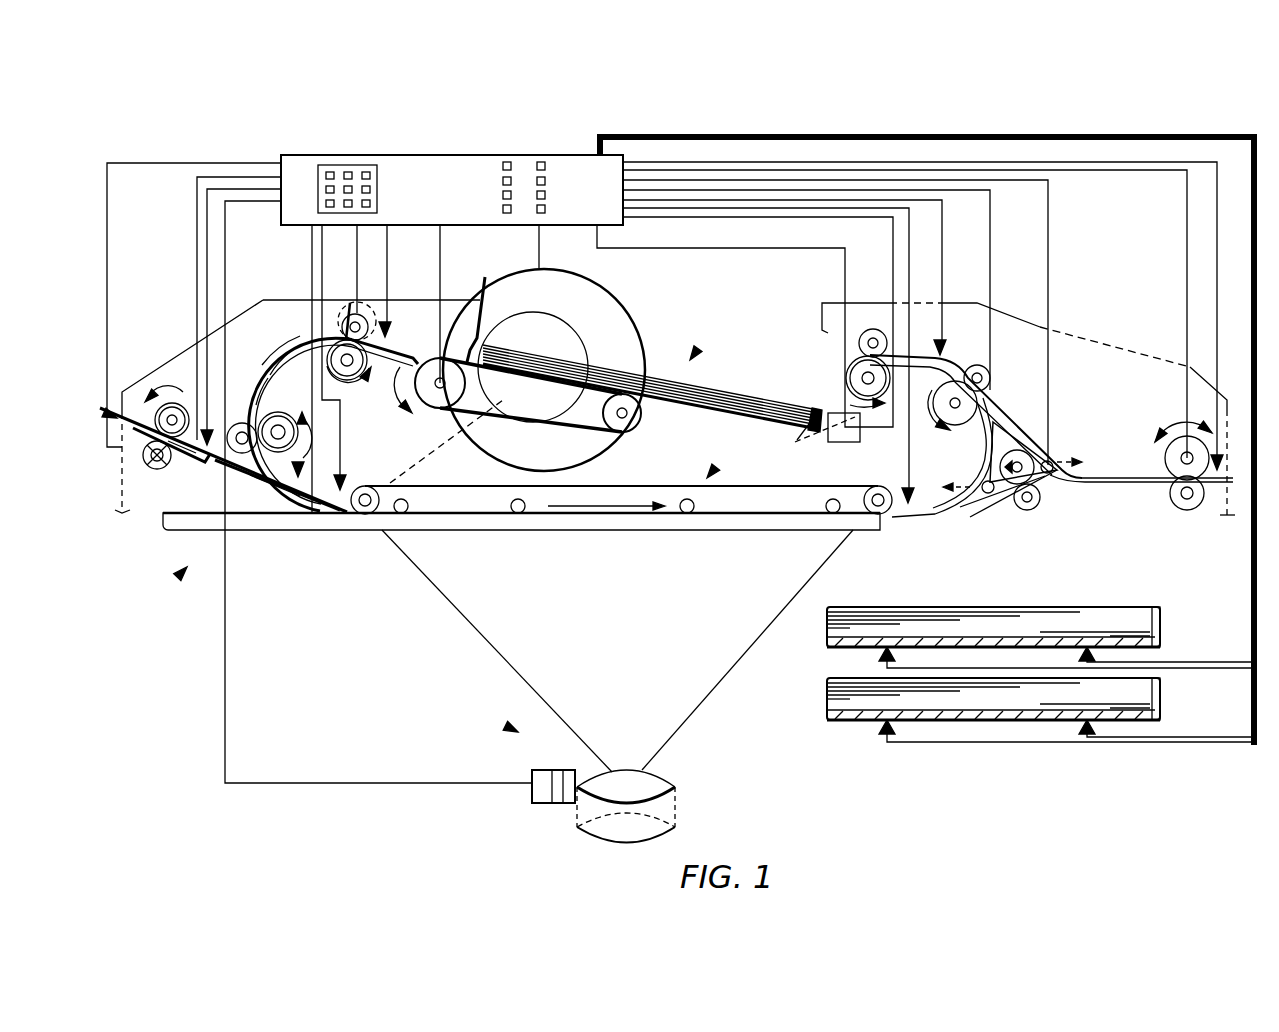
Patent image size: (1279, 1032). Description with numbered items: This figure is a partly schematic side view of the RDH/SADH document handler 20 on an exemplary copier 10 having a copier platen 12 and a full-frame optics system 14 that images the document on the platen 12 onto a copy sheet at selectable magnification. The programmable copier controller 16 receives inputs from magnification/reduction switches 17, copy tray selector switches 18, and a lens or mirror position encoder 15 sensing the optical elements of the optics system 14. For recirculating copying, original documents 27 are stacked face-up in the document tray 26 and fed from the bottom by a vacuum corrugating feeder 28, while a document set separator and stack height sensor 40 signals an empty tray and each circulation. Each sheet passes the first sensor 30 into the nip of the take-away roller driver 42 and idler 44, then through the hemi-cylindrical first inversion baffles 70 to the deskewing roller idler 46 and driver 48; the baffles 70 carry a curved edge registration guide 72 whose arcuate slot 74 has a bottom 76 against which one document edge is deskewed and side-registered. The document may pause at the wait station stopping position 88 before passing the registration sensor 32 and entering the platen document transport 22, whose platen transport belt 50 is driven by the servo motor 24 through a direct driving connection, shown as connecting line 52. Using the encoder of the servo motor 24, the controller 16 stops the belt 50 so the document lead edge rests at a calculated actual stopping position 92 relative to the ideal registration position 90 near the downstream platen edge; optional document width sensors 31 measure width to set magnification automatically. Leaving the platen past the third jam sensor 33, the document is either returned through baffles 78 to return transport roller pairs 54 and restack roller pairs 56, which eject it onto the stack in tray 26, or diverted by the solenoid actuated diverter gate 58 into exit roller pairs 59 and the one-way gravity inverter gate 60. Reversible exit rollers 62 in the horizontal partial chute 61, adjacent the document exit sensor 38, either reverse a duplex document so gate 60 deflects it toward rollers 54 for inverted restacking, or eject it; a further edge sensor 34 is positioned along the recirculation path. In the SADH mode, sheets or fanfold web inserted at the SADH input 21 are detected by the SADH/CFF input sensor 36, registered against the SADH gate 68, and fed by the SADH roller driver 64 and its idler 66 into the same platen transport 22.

The copier 10 is at (180, 574).
The copier platen 12 is at (470, 520).
The optics system 14 is at (510, 728).
The lens or mirror position encoder 15 is at (540, 795).
The copier controller 16 is at (442, 153).
The magnification/reduction switches 17 is at (543, 162).
The copy tray selector switches 18 is at (510, 162).
The RDH/SADH system 20 is at (693, 356).
The SADH input 21 is at (107, 409).
The platen document transport 22 is at (760, 467).
The servo motor 24 is at (625, 330).
The document tray 26 is at (712, 415).
The original documents 27 is at (720, 396).
The vacuum corrugating feeder 28 is at (421, 399).
The first sensor 30 is at (390, 325).
The document width sensors 31 is at (346, 515).
The registration sensor 32 is at (305, 476).
The third jam sensor 33 is at (912, 508).
The document edge sensor 34 is at (944, 352).
The SADH/CFF input sensor 36 is at (228, 467).
The document exit sensor 38 is at (1213, 487).
The document set separator and stack height sensor 40 is at (853, 434).
The take-away roller driver 42 is at (352, 380).
The take-away idler 44 is at (350, 313).
The deskewing roller idler 46 is at (240, 423).
The deskewing roller driver 48 is at (280, 412).
The platen transport belt 50 is at (617, 531).
The connecting line 52 is at (446, 441).
The return transport roller pairs 54 is at (955, 405).
The restack roller pairs 56 is at (858, 372).
The diverter gate 58 is at (980, 512).
The exit roller pairs 59 is at (1027, 510).
The gravity inverter gate 60 is at (1067, 480).
The horizontal partial chute 61 is at (1127, 482).
The exit rollers 62 is at (1167, 458).
The SADH roller driver 64 is at (163, 395).
The idler 66 is at (150, 470).
The SADH gate 68 is at (180, 463).
The first inversion baffles 70 is at (263, 375).
The curved edge registration guide 72 is at (290, 340).
The arcuate slot 74 is at (275, 333).
The slot bottom 76 is at (273, 362).
The baffles 78 is at (988, 458).
The wait station stopping position 88 is at (273, 473).
The ideal registration position 90 is at (870, 517).
The actual document stopping position 92 is at (782, 498).